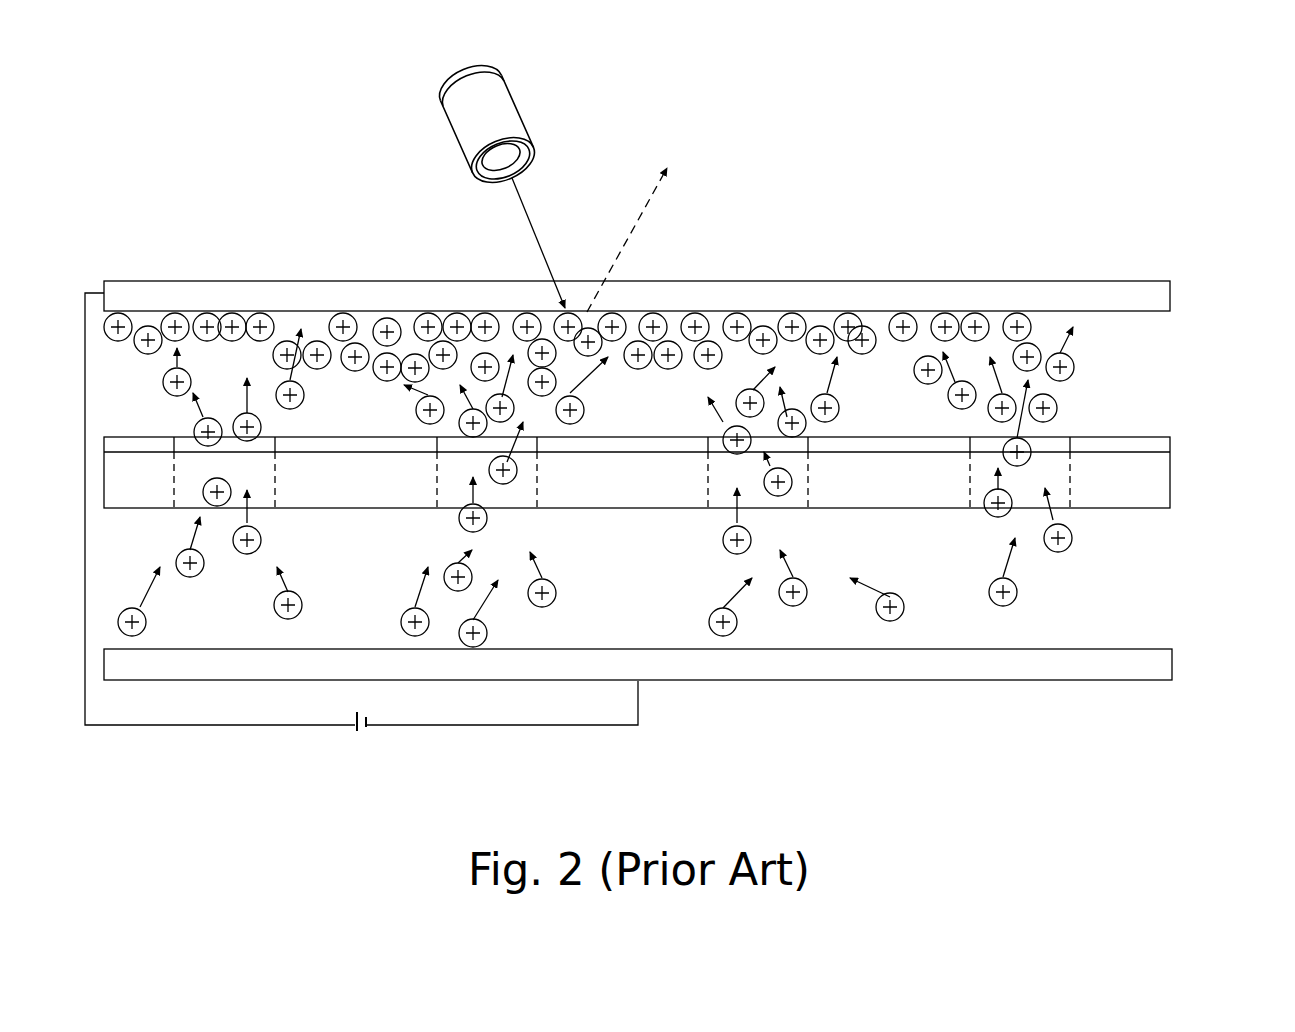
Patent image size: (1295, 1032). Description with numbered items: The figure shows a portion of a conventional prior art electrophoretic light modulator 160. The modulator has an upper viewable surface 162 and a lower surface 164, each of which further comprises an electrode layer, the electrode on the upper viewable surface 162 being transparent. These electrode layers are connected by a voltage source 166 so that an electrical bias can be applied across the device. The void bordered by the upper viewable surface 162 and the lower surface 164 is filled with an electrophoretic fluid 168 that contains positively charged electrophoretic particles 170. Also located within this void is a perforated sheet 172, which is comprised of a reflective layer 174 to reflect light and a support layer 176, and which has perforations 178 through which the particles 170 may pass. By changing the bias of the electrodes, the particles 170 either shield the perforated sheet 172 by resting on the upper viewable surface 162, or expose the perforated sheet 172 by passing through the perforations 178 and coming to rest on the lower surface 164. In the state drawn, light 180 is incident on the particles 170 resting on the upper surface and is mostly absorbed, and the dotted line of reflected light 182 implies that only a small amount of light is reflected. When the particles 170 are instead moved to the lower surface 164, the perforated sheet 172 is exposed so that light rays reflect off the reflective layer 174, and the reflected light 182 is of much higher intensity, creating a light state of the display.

The electrophoretic light modulator 160 is at (263, 258).
The upper viewable surface 162 is at (1073, 287).
The lower surface 164 is at (1018, 668).
The voltage source 166 is at (162, 725).
The electrophoretic fluid 168 is at (668, 419).
The electrophoretic particles 170 is at (1075, 365).
The perforated sheet 172 is at (689, 470).
The reflective layer 174 is at (1100, 437).
The support layer 176 is at (650, 497).
The perforations 178 is at (262, 506).
The incident light 180 is at (537, 245).
The reflected light 182 is at (640, 217).